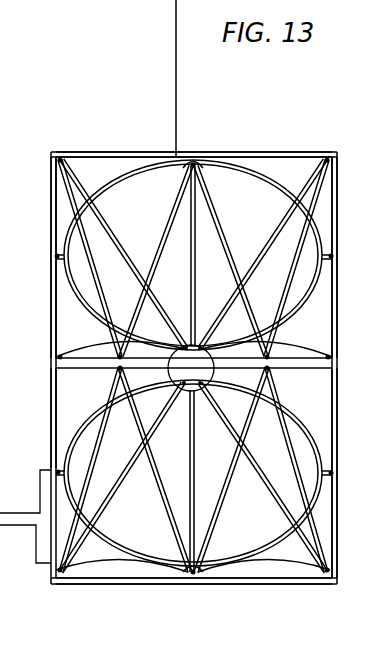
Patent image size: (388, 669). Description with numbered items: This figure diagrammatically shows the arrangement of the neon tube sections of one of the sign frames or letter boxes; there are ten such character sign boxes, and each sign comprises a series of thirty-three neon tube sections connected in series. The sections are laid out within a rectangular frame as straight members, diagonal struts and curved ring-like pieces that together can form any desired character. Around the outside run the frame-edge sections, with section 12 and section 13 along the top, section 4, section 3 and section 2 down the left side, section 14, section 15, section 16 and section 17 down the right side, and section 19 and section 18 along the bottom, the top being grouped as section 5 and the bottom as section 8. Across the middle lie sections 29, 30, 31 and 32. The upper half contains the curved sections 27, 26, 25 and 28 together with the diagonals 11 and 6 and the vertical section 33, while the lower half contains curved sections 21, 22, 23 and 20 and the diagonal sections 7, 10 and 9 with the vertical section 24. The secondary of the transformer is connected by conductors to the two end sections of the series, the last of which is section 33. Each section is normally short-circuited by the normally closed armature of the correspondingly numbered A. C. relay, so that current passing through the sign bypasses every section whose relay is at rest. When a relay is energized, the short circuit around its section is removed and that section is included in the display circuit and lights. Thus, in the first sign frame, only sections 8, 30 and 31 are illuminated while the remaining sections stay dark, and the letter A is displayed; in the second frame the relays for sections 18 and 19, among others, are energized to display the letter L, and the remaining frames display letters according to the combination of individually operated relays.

The neon tube section 2 is at (40, 368).
The neon tube section 3 is at (40, 256).
The neon tube section 4 is at (40, 158).
The neon tube section 5 is at (196, 121).
The neon tube section 6 is at (274, 234).
The neon tube section 7 is at (115, 489).
The neon tube section 8 is at (193, 612).
The neon tube section 9 is at (259, 474).
The neon tube section 10 is at (230, 430).
The neon tube section 11 is at (116, 227).
The neon tube section 12 is at (190, 142).
The neon tube section 13 is at (265, 137).
The neon tube section 14 is at (348, 163).
The neon tube section 15 is at (348, 257).
The neon tube section 16 is at (348, 370).
The neon tube section 17 is at (348, 470).
The neon tube section 18 is at (262, 597).
The neon tube section 19 is at (55, 584).
The neon tube section 20 is at (160, 548).
The neon tube section 21 is at (79, 446).
The neon tube section 22 is at (306, 445).
The neon tube section 23 is at (210, 563).
The neon tube section 24 is at (185, 438).
The neon tube section 25 is at (305, 294).
The neon tube section 26 is at (262, 176).
The neon tube section 27 is at (117, 176).
The neon tube section 28 is at (82, 294).
The neon tube section 29 is at (68, 368).
The neon tube section 30 is at (150, 368).
The neon tube section 31 is at (226, 368).
The neon tube section 32 is at (300, 368).
The neon tube section 33 is at (199, 258).